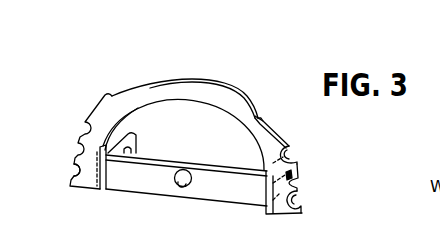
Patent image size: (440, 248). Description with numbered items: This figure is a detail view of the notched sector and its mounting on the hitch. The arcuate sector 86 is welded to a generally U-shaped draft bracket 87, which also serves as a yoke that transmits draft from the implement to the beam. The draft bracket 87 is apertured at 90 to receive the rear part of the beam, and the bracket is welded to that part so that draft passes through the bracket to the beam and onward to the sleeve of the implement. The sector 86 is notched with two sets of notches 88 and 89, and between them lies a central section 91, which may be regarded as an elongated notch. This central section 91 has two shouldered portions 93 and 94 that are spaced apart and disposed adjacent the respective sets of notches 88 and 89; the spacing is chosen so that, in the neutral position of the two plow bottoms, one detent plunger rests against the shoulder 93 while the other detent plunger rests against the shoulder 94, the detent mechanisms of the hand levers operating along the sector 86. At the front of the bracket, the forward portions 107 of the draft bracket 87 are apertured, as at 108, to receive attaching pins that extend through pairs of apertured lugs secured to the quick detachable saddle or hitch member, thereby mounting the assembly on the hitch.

The arcuate sector 86 is at (245, 92).
The draft bracket 87 is at (221, 210).
The notches 88 is at (64, 169).
The notches 89 is at (306, 202).
The aperture 90 is at (179, 187).
The central section 91 is at (186, 78).
The shouldered portion 93 is at (267, 119).
The shouldered portion 94 is at (110, 95).
The forward portions 107 is at (135, 137).
The apertures 108 is at (133, 151).